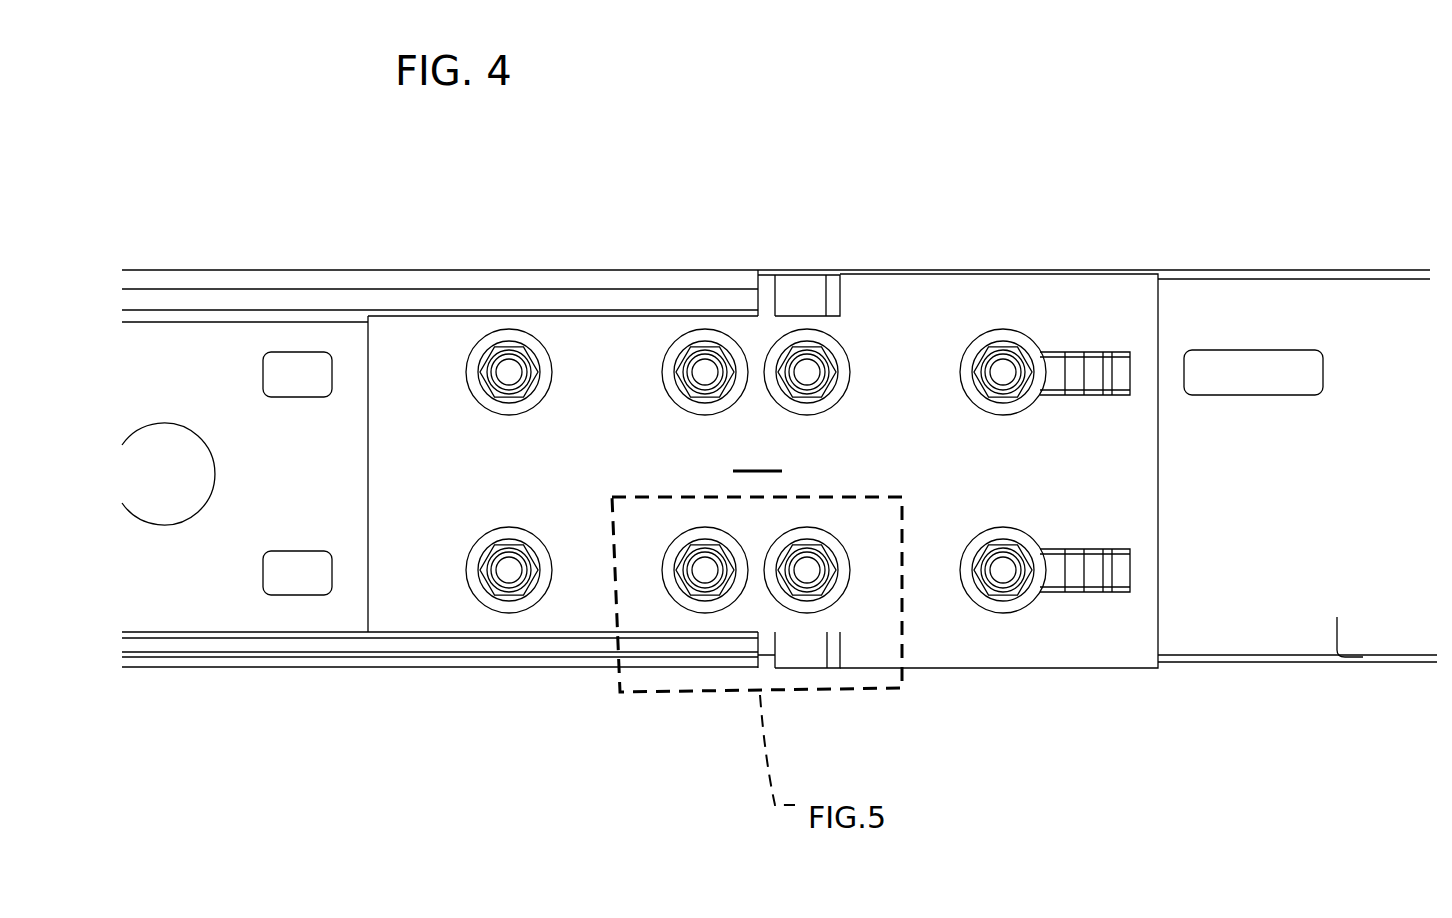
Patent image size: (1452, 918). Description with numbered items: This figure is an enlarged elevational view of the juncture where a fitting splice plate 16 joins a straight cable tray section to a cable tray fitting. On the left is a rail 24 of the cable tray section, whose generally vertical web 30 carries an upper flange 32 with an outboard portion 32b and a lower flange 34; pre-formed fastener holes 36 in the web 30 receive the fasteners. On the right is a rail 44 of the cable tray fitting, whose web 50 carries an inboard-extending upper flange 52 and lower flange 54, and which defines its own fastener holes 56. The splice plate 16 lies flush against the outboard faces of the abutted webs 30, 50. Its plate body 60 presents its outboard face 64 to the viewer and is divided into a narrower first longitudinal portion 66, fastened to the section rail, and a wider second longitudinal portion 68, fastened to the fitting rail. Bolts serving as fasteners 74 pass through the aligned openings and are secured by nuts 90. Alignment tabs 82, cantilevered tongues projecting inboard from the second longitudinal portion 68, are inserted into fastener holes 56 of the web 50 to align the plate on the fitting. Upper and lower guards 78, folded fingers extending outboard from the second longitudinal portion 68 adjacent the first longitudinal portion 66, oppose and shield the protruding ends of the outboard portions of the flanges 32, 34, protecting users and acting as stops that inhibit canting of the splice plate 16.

The fitting splice plate 16 is at (997, 698).
The rail 24 is at (425, 222).
The web 30 is at (205, 592).
The upper flange 32 is at (555, 270).
The outboard portion of upper flange 32b is at (677, 289).
The lower flange 34 is at (505, 668).
The fastener holes 36 is at (305, 371).
The rail 44 is at (1328, 245).
The web 50 is at (1200, 603).
The upper flange 52 is at (1248, 268).
The lower flange 54 is at (1265, 663).
The fastener holes 56 is at (1238, 378).
The plate body 60 is at (960, 276).
The outboard face 64 is at (757, 452).
The first longitudinal portion 66 is at (423, 617).
The second longitudinal portion 68 is at (935, 650).
The fasteners 74 is at (509, 570).
The guards 78 is at (800, 290).
The alignment tabs 82 is at (1088, 377).
The nuts 90 is at (485, 382).